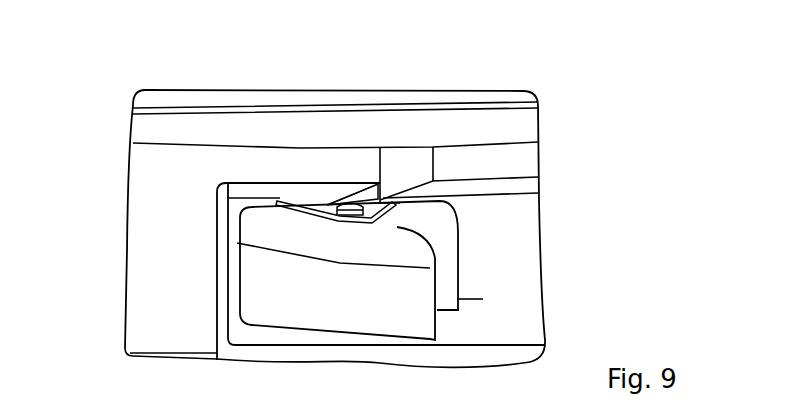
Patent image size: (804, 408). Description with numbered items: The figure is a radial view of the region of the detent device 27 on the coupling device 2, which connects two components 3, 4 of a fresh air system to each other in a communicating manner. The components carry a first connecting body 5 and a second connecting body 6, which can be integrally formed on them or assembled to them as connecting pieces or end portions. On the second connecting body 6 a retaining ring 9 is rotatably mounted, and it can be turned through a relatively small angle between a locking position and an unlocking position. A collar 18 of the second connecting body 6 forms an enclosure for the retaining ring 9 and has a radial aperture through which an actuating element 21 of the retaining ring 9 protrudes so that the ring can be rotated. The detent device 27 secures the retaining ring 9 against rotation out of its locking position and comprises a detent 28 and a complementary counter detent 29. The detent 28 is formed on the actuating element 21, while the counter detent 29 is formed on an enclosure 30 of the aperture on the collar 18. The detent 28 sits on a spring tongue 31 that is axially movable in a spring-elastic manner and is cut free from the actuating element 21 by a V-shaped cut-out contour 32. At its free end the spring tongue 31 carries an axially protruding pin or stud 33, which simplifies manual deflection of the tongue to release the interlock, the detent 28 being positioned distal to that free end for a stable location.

The coupling device 2 is at (578, 80).
The component 3 is at (500, 104).
The component 4 is at (157, 190).
The first connecting body 5 is at (473, 100).
The second connecting body 6 is at (133, 360).
The retaining ring 9 is at (510, 245).
The collar 18 is at (163, 220).
The actuating element 21 is at (322, 308).
The detent device 27 is at (323, 184).
The detent 28 is at (367, 188).
The counter detent 29 is at (403, 163).
The enclosure 30 is at (530, 158).
The spring tongue 31 is at (314, 200).
The cut-out contour 32 is at (280, 197).
The pin or stud 33 is at (349, 203).